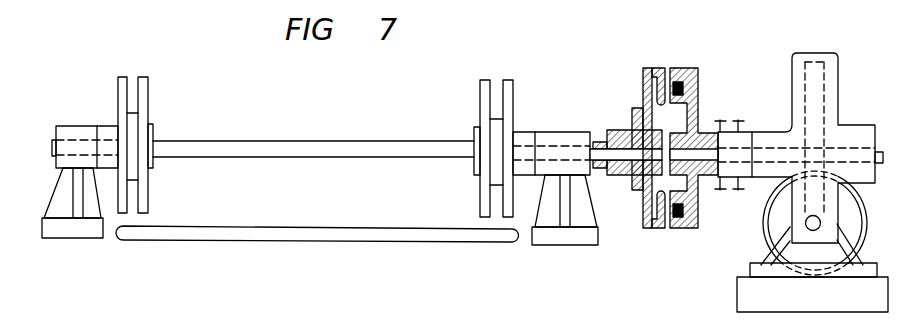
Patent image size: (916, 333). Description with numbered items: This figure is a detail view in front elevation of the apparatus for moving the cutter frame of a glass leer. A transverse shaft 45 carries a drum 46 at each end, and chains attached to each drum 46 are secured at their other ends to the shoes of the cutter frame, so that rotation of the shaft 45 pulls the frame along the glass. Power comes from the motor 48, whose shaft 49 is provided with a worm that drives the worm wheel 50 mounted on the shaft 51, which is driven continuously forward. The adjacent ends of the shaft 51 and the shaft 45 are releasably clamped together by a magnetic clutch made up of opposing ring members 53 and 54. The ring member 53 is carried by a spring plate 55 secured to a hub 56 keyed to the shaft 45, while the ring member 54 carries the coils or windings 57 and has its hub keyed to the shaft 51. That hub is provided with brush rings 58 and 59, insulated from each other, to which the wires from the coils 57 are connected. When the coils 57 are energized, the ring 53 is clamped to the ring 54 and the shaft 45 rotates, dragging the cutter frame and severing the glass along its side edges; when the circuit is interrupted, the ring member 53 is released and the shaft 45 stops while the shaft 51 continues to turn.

The transverse shaft 45 is at (309, 145).
The drum 46 is at (139, 90).
The motor 48 is at (764, 221).
The motor shaft 49 is at (806, 225).
The worm wheel 50 is at (824, 62).
The shaft 51 is at (783, 150).
The ring member 53 is at (633, 132).
The ring member 54 is at (678, 68).
The spring plate 55 is at (643, 79).
The hub 56 is at (622, 131).
The coils 57 is at (684, 88).
The brush ring 58 is at (720, 120).
The brush ring 59 is at (739, 120).